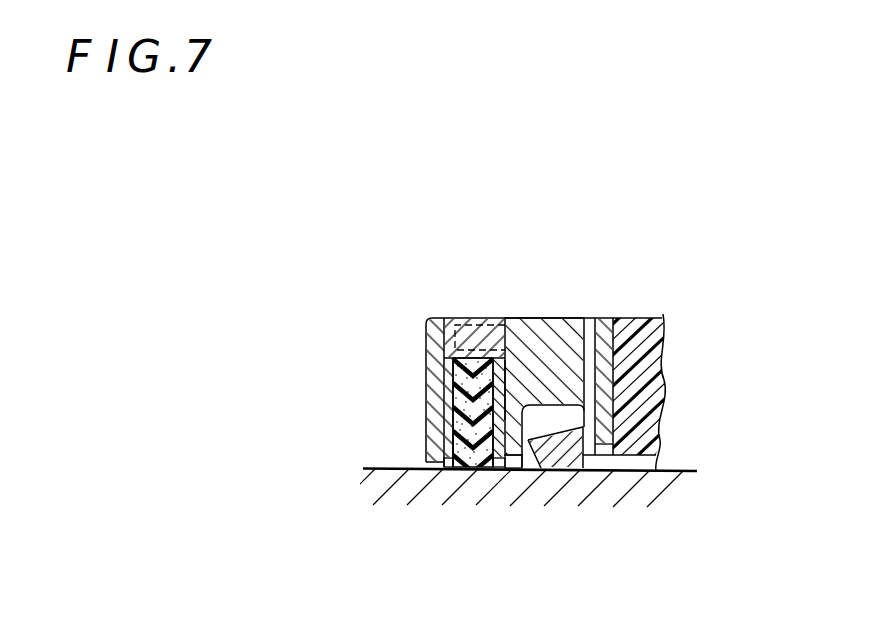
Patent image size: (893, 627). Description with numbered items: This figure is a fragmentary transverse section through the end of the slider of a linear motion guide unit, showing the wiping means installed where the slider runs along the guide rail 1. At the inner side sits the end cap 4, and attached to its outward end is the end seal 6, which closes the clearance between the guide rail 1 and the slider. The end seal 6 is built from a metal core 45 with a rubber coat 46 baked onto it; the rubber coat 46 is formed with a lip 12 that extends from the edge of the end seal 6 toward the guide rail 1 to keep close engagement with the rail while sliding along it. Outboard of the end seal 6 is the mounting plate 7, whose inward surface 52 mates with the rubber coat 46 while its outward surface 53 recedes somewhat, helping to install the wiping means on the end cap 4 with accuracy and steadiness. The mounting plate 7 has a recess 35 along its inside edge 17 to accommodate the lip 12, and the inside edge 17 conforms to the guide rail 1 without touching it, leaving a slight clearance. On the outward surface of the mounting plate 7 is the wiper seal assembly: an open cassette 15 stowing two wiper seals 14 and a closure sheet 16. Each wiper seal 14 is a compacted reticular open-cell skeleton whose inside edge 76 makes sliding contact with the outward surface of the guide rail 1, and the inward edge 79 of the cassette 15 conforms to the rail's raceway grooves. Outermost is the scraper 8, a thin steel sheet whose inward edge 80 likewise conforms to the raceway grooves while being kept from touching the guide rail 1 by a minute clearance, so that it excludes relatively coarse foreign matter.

The guide rail 1 is at (646, 487).
The end cap 4 is at (642, 397).
The end seal 6 is at (578, 447).
The mounting plate 7 is at (542, 345).
The scraper 8 is at (432, 357).
The lip 12 is at (565, 457).
The wiper seal 14 is at (458, 393).
The cassette 15 is at (470, 326).
The closure sheet 16 is at (508, 377).
The inside edge 17 is at (488, 469).
The recess 35 is at (523, 469).
The metal core 45 is at (606, 340).
The rubber coat 46 is at (589, 340).
The inward surface 52 is at (633, 330).
The outward surface 53 is at (503, 318).
The inside edge 76 is at (462, 469).
The inward edge 79 is at (446, 469).
The inward edge 80 is at (432, 468).